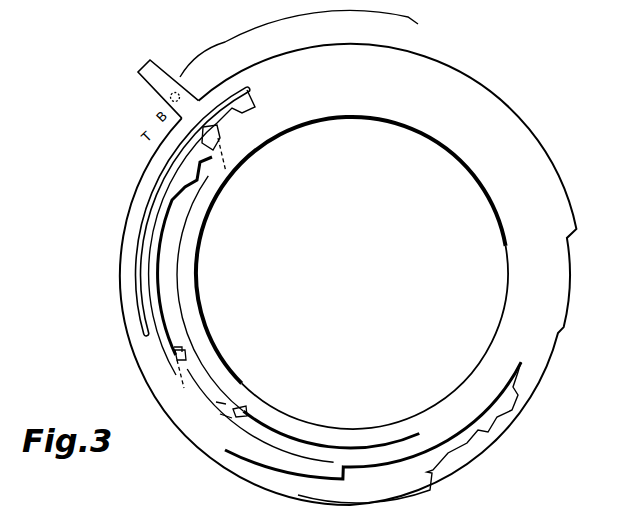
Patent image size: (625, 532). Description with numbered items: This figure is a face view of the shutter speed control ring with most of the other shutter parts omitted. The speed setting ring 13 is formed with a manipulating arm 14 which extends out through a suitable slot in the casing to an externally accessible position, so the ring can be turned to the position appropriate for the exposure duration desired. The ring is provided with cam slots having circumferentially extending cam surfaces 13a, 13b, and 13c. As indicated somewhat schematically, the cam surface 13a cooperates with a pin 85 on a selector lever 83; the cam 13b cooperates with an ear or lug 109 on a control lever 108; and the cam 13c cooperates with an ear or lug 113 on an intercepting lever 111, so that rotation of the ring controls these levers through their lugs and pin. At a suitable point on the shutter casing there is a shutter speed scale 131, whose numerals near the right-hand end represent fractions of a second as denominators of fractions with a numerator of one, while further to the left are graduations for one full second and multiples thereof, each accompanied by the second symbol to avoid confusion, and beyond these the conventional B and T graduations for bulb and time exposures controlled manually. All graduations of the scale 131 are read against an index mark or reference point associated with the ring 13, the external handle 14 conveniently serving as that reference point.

The speed setting ring 13 is at (538, 160).
The cam surface 13a is at (257, 423).
The cam surface 13b is at (190, 372).
The cam surface 13c is at (155, 218).
The manipulating arm 14 is at (158, 82).
The shutter speed scale 131 is at (306, 45).
The ear or lug 113 is at (220, 128).
The intercepting lever 111 is at (222, 150).
The ear or lug 109 is at (180, 350).
The control lever 108 is at (186, 352).
The selector lever 83 is at (218, 407).
The pin 85 is at (238, 415).